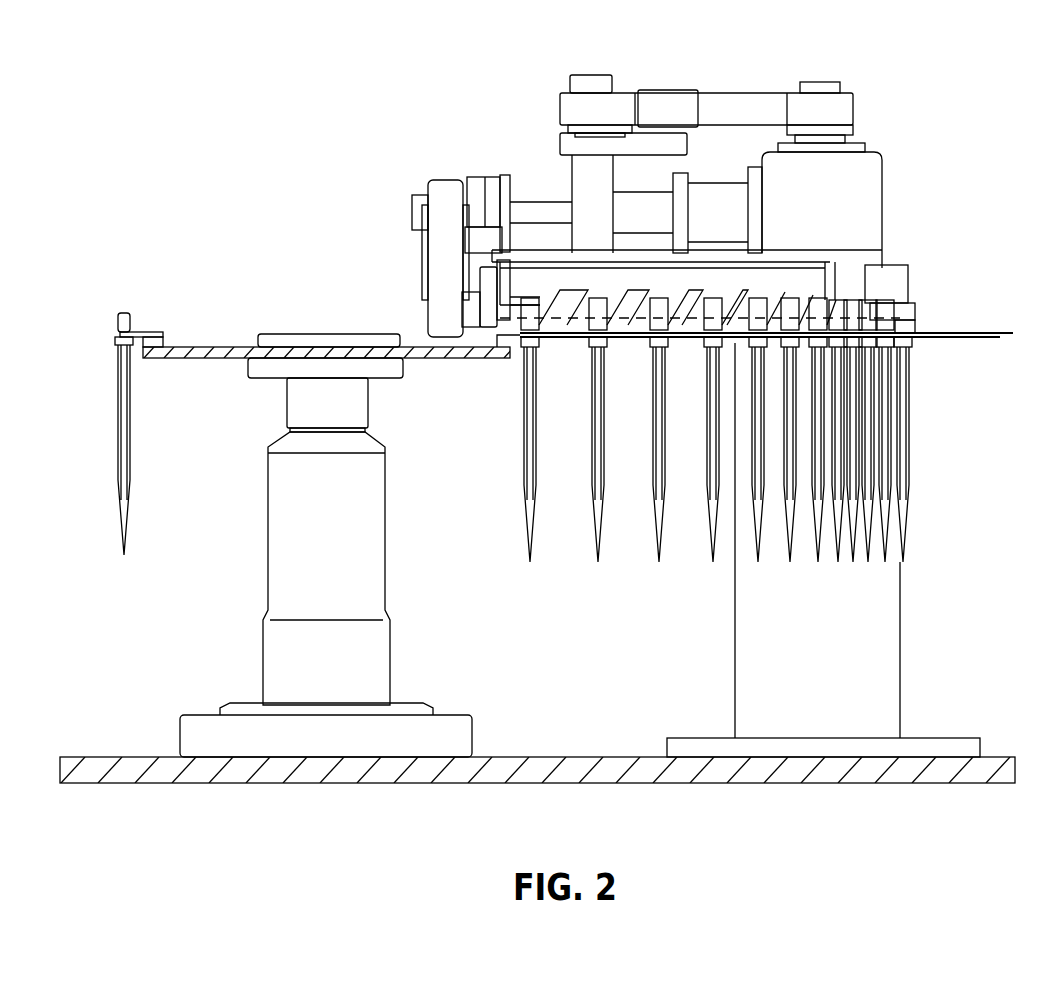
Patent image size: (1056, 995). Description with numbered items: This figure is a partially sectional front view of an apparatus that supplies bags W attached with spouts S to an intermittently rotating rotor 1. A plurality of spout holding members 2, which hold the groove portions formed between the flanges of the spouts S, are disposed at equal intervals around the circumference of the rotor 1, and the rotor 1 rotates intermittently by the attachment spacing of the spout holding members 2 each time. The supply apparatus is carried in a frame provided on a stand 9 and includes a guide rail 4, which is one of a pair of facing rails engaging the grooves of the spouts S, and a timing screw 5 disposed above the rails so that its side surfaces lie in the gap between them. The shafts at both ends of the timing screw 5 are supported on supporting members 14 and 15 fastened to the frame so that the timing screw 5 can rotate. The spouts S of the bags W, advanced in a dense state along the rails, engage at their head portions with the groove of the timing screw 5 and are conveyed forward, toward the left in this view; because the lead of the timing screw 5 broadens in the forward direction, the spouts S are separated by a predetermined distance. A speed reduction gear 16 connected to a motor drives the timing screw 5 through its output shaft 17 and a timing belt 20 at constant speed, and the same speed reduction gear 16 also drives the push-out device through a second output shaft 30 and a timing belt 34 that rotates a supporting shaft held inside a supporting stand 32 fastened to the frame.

The rotor 1 is at (220, 350).
The spout holding member 2 is at (138, 331).
The guide rail 4 is at (993, 339).
The timing screw 5 is at (635, 327).
The stand 9 is at (885, 637).
The supporting member 14 is at (487, 282).
The supporting member 15 is at (877, 275).
The speed reduction gear 16 is at (868, 183).
The output shaft 17 is at (545, 200).
The timing belt 20 is at (443, 188).
The output shaft 30 is at (843, 88).
The supporting stand 32 is at (573, 168).
The timing belt 34 is at (745, 100).
The spout S is at (118, 320).
The bag W is at (117, 385).